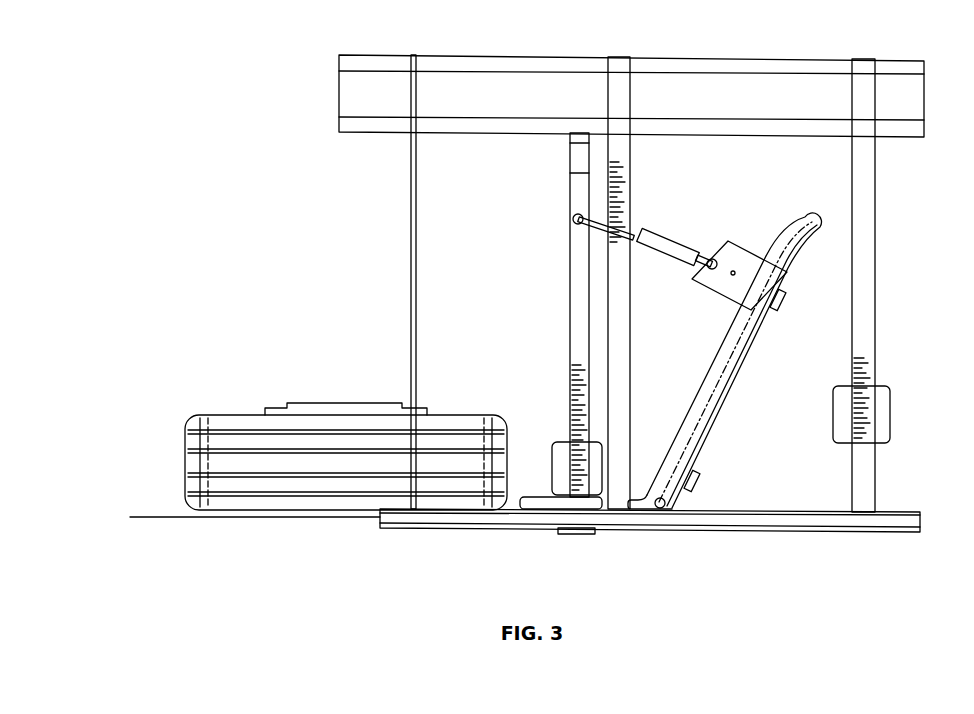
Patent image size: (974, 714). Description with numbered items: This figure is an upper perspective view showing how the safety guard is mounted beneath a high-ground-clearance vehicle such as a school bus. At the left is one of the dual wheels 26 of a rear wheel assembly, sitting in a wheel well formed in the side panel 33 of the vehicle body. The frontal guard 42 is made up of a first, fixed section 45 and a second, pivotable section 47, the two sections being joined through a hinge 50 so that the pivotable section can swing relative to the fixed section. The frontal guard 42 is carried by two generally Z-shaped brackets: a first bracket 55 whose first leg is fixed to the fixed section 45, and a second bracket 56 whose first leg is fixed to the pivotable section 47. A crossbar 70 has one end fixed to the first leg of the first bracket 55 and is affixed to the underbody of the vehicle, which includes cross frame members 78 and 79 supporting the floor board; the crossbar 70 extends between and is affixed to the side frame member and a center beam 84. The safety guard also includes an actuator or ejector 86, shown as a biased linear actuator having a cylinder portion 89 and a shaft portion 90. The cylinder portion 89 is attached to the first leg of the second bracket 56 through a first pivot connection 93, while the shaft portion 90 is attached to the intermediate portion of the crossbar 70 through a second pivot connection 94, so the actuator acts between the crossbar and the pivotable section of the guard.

The dual wheel 26 is at (295, 498).
The side panel 33 is at (775, 523).
The frontal guard 42 is at (724, 397).
The first fixed section 45 is at (645, 497).
The second pivotable section 47 is at (717, 405).
The hinge 50 is at (660, 510).
The first bracket 55 is at (560, 441).
The second bracket 56 is at (752, 248).
The crossbar 70 is at (566, 368).
The cross frame member 78 is at (620, 400).
The cross frame member 79 is at (866, 244).
The center beam 84 is at (702, 90).
The actuator or ejector 86 is at (661, 233).
The cylinder portion 89 is at (670, 253).
The shaft portion 90 is at (590, 240).
The first pivot connection 93 is at (713, 259).
The second pivot connection 94 is at (573, 220).